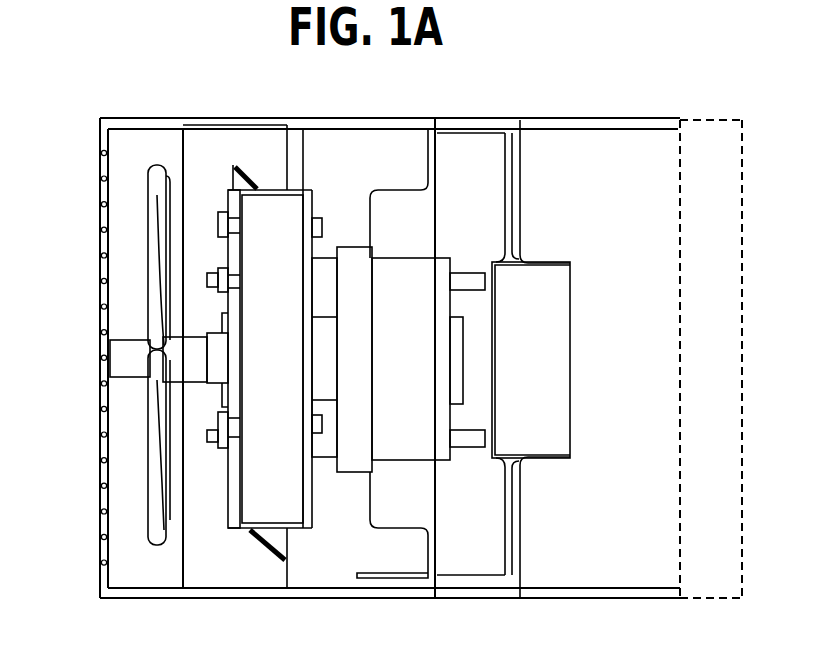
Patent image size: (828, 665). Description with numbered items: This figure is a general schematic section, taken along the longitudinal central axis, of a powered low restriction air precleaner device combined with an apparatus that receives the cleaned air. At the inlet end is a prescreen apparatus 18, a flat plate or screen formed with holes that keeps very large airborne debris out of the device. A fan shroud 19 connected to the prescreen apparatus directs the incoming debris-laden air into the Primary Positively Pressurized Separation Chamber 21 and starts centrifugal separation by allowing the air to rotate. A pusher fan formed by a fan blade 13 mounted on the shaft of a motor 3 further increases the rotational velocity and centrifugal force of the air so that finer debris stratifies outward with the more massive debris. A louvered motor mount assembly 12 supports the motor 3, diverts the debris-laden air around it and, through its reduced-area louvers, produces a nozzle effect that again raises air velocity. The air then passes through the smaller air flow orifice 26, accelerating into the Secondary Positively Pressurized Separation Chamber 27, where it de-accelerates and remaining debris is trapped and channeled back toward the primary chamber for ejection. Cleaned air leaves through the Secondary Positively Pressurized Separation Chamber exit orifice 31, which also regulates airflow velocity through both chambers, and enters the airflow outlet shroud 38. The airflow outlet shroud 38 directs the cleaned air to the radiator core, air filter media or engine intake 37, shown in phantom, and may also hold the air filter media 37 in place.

The motor 3 is at (436, 277).
The louvered motor mount assembly 12 is at (233, 165).
The fan blade 13 is at (152, 197).
The prescreen apparatus 18 is at (100, 340).
The fan shroud 19 is at (150, 599).
The Primary Positively Pressurized Separation Chamber 21 is at (330, 155).
The air flow orifice 26 is at (365, 503).
The Secondary Positively Pressurized Separation Chamber 27 is at (463, 162).
The Secondary Positively Pressurized Separation Chamber exit orifice 31 is at (550, 448).
The air filter media 37 is at (716, 178).
The airflow outlet shroud 38 is at (592, 127).